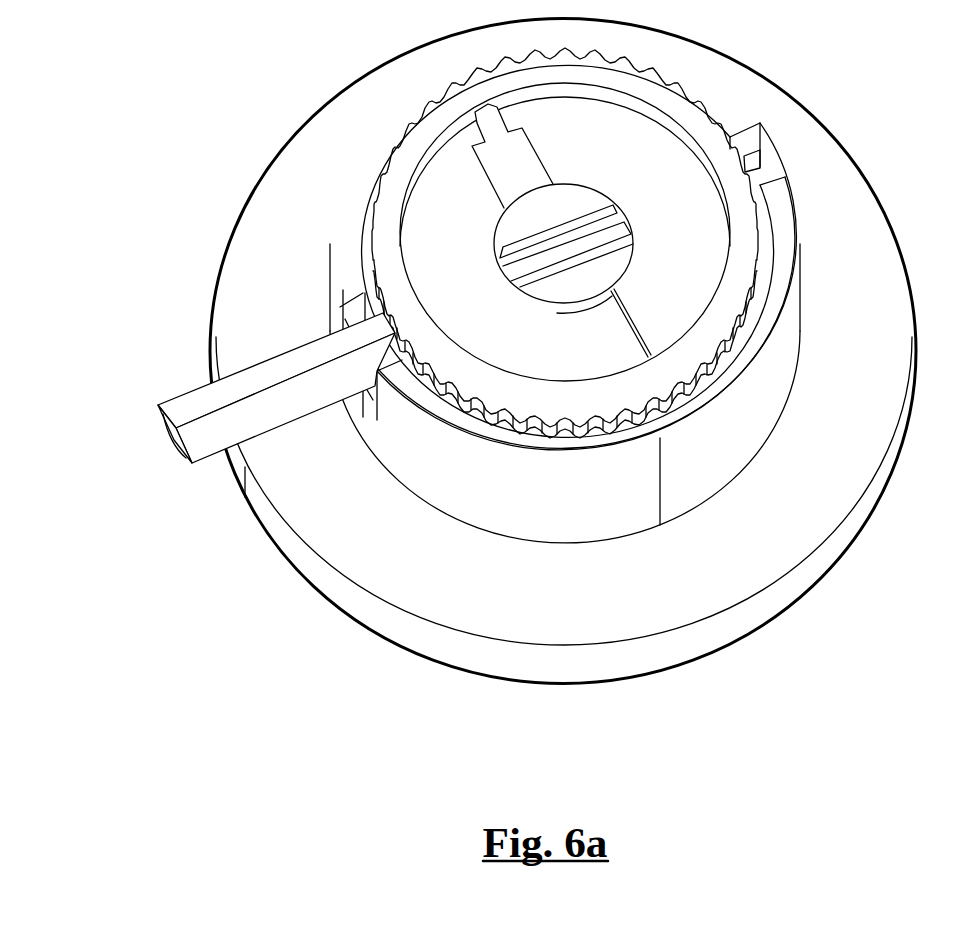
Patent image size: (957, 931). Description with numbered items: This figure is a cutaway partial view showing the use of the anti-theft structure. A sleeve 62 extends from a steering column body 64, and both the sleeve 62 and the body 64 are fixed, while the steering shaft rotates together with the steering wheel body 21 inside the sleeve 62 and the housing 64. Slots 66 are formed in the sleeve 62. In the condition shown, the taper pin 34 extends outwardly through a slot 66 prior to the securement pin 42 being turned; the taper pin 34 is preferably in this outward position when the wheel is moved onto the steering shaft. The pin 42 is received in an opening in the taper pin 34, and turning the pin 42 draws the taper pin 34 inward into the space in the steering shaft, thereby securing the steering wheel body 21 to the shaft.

The body 21 is at (380, 214).
The taper pin 34 is at (183, 462).
The securement pin 42 is at (758, 182).
The sleeve 62 is at (448, 502).
The steering column body 64 is at (345, 596).
The slots 66 is at (752, 138).